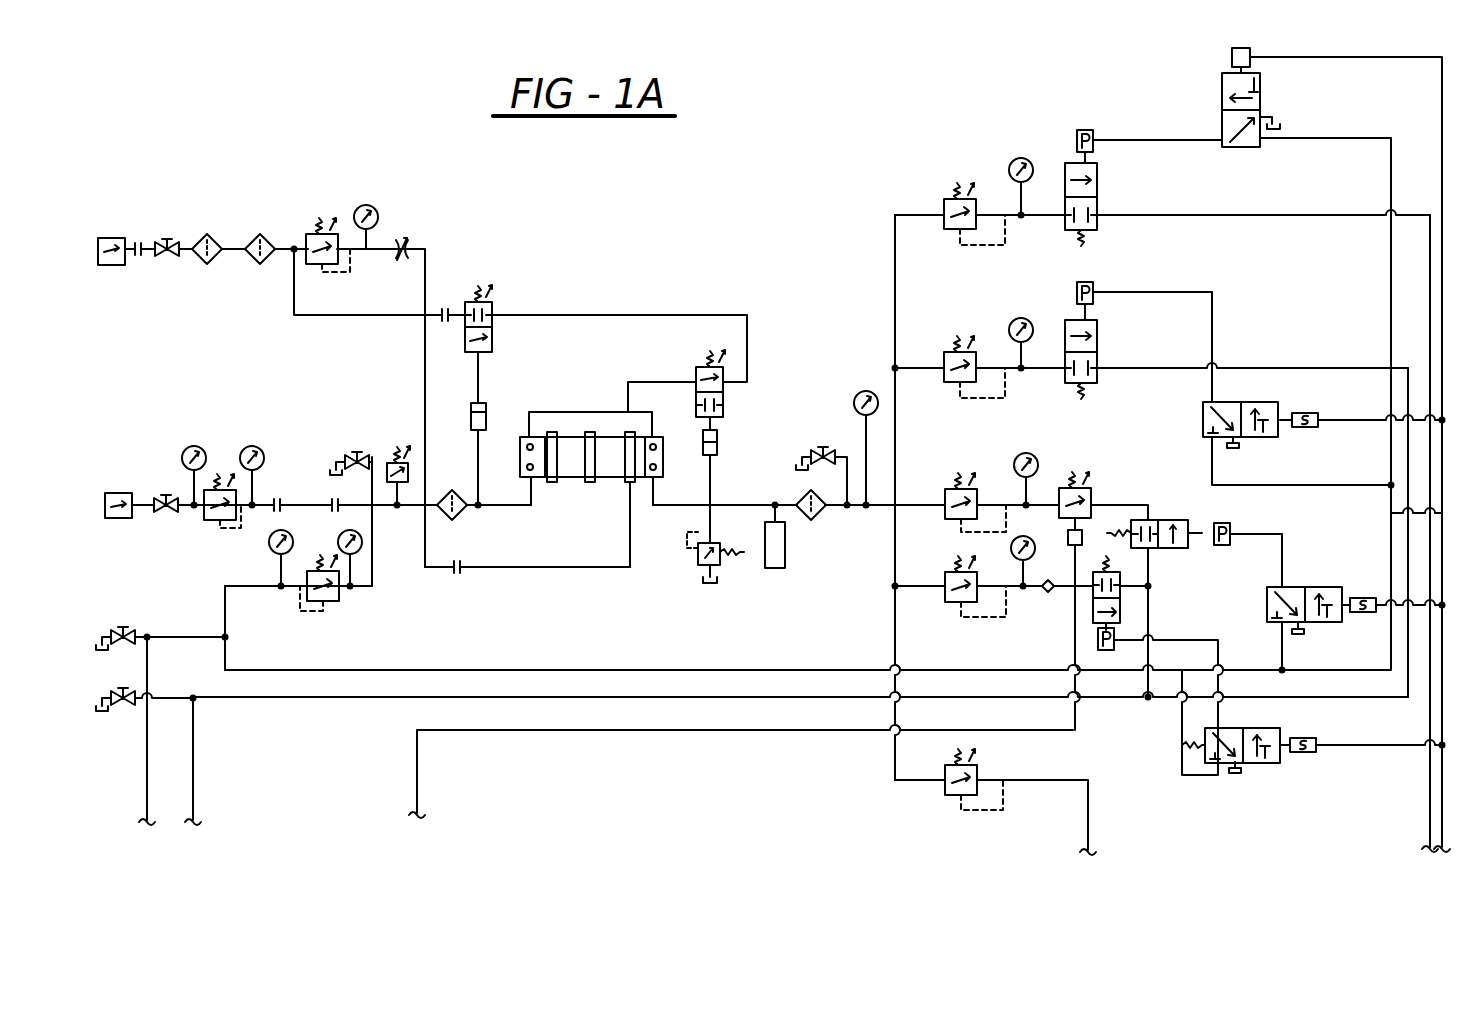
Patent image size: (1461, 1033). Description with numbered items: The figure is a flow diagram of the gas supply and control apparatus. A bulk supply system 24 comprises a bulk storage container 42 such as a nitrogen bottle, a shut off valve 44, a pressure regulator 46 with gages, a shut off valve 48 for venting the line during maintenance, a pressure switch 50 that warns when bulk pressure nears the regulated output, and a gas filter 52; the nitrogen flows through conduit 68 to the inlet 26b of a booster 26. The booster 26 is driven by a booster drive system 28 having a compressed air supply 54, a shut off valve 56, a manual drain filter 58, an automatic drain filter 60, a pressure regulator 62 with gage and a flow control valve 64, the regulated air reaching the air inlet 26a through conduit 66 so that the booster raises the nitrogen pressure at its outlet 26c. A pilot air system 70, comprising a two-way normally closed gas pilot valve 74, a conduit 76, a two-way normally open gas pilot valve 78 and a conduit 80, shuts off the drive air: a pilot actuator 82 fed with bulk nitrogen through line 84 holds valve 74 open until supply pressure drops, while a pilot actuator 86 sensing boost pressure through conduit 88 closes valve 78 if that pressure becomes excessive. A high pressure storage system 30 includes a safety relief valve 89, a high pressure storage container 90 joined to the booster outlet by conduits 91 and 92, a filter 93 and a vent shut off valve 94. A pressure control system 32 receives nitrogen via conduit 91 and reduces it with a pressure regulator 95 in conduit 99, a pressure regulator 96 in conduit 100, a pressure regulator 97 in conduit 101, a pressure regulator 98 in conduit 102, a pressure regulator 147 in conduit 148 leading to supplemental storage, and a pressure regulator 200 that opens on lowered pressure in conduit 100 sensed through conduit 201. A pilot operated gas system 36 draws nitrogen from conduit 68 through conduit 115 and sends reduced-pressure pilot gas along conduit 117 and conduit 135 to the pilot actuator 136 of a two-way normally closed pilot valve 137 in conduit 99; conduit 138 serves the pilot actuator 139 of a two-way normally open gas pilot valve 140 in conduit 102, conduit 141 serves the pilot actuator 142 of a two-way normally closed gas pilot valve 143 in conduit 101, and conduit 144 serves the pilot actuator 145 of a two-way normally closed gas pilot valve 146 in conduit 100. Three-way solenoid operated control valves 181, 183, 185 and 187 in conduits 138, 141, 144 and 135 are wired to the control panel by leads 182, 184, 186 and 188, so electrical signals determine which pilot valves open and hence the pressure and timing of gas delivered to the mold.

The bulk supply system 24 is at (140, 491).
The booster 26 is at (610, 479).
The air inlet 26a is at (628, 484).
The inlet 26b is at (532, 480).
The booster nitrogen outlet 26c is at (650, 478).
The booster drive system 28 is at (262, 325).
The high pressure storage system 30 is at (770, 492).
The pressure control system 32 is at (906, 188).
The pilot operated gas system 36 is at (165, 620).
The bulk storage container 42 is at (116, 493).
The shut off valve 44 is at (172, 516).
The pressure regulator 46 is at (222, 472).
The shut off valve 48 is at (346, 452).
The pressure switch 50 is at (386, 457).
The gas filter 52 is at (448, 518).
The compressed air supply 54 is at (110, 238).
The shut off valve 56 is at (170, 262).
The manual drain filter 58 is at (218, 236).
The automatic drain filter 60 is at (257, 267).
The pressure regulator 62 is at (308, 236).
The flow control valve 64 is at (430, 245).
The conduit 66 is at (603, 570).
The conduit 68 is at (300, 502).
The pilot air system 70 is at (410, 283).
The two-way normally closed gas pilot valve 74 is at (471, 343).
The conduit 76 is at (572, 315).
The two-way normally open gas pilot valve 78 is at (702, 365).
The conduit 80 is at (648, 382).
The pilot actuator 82 is at (488, 408).
The line 84 is at (473, 470).
The pilot actuator 86 is at (720, 440).
The conduit 88 is at (715, 492).
The safety relief valve 89 is at (696, 565).
The high pressure storage container 90 is at (785, 555).
The conduit 91 is at (685, 506).
The conduit 92 is at (768, 520).
The filter 93 is at (822, 516).
The shut off valve 94 is at (825, 446).
The pressure regulator 95 is at (945, 196).
The pressure regulator 96 is at (958, 346).
The pressure regulator 97 is at (947, 487).
The pressure regulator 98 is at (950, 572).
The conduit 99 is at (895, 222).
The conduit 100 is at (195, 796).
The conduit 101 is at (925, 500).
The conduit 102 is at (930, 590).
The conduit 115 is at (376, 576).
The conduit 117 is at (228, 620).
The conduit 135 is at (400, 669).
The pilot actuator 136 is at (1081, 128).
The two-way normally closed pilot valve 137 is at (1063, 227).
The conduit 138 is at (1200, 640).
The pilot actuator 139 is at (1106, 652).
The two-way normally open gas pilot valve 140 is at (1122, 582).
The conduit 141 is at (1284, 584).
The pilot actuator 142 is at (1234, 530).
The two-way normally closed gas pilot valve 143 is at (1160, 520).
The conduit 144 is at (1215, 320).
The pilot actuator 145 is at (1098, 290).
The two-way normally closed gas pilot valve 146 is at (1100, 380).
The pressure regulator 147 is at (942, 790).
The conduit 148 is at (918, 776).
The three-way solenoid operated control valve 181 is at (1263, 767).
The lead 182 is at (1395, 746).
The three-way solenoid operated control valve 183 is at (1266, 606).
The lead 184 is at (1408, 698).
The three-way solenoid operated control valve 185 is at (1270, 402).
The lead 186 is at (1400, 424).
The three-way solenoid operated control valve 187 is at (1268, 102).
The lead 188 is at (1440, 108).
The pressure regulator 200 is at (1061, 488).
The conduit 201 is at (420, 778).